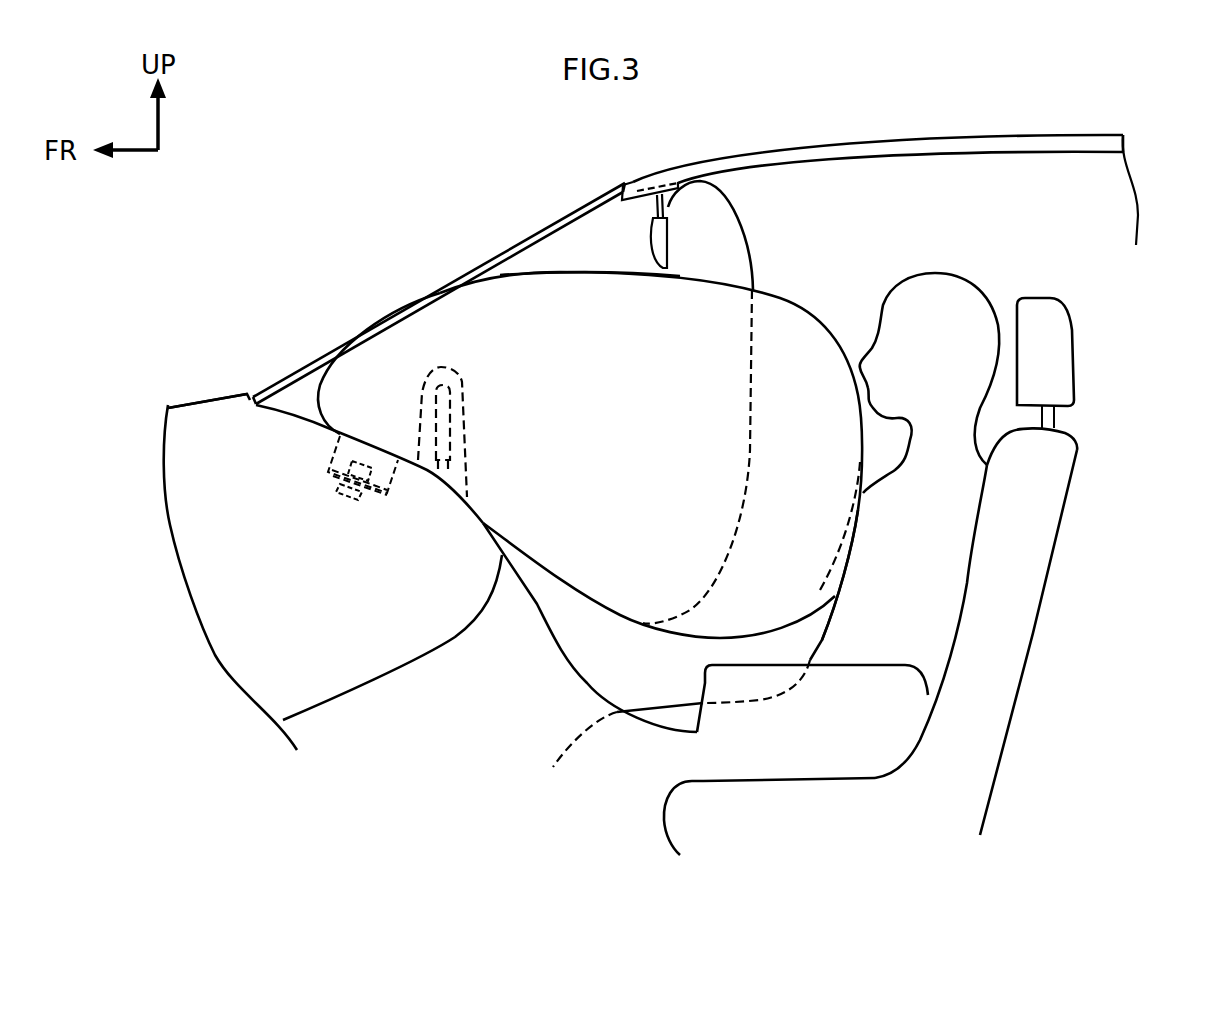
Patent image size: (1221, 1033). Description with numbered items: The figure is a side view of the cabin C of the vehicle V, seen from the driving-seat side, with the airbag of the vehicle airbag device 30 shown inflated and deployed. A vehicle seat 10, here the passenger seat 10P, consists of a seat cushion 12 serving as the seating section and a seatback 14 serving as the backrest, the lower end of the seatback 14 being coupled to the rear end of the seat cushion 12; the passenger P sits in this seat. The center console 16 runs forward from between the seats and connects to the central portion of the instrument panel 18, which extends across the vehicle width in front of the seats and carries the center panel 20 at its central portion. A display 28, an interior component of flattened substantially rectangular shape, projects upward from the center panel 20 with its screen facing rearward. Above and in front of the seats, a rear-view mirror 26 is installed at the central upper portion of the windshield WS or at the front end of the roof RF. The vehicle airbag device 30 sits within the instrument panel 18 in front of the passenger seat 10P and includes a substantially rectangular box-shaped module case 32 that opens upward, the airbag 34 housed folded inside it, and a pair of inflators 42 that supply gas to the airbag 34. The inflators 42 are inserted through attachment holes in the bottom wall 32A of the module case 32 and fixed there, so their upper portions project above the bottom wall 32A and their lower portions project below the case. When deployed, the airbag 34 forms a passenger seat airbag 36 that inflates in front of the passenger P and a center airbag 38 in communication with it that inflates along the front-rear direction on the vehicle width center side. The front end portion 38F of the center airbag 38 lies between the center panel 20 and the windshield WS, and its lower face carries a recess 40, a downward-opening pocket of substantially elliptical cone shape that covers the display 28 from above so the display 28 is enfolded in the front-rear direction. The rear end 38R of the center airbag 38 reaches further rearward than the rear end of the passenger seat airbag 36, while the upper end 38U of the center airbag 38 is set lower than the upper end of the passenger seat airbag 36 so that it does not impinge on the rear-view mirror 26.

The vehicle seat 10 is at (992, 566).
The passenger seat 10P is at (1048, 566).
The seat cushion 12 is at (697, 781).
The seatback 14 is at (1033, 635).
The center console 16 is at (853, 668).
The instrument panel 18 is at (430, 524).
The center panel 20 is at (207, 401).
The rear-view mirror 26 is at (670, 208).
The display 28 is at (453, 425).
The vehicle airbag device 30 is at (400, 285).
The module case 32 is at (330, 464).
The bottom wall 32A is at (337, 480).
The airbag 34 is at (662, 473).
The passenger seat airbag 36 is at (745, 228).
The center airbag 38 is at (626, 471).
The front end portion 38F is at (383, 348).
The rear end 38R is at (855, 537).
The upper end 38U is at (585, 273).
The recess 40 is at (447, 368).
The inflator 42 is at (352, 498).
The vehicle V is at (406, 180).
The windshield WS is at (497, 250).
The roof RF is at (872, 140).
The cabin C is at (983, 172).
The passenger P is at (970, 280).